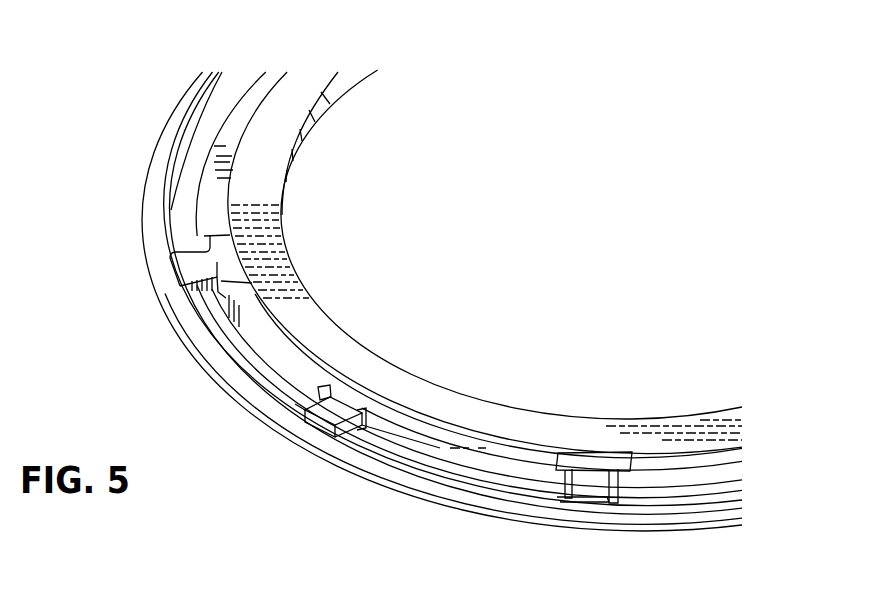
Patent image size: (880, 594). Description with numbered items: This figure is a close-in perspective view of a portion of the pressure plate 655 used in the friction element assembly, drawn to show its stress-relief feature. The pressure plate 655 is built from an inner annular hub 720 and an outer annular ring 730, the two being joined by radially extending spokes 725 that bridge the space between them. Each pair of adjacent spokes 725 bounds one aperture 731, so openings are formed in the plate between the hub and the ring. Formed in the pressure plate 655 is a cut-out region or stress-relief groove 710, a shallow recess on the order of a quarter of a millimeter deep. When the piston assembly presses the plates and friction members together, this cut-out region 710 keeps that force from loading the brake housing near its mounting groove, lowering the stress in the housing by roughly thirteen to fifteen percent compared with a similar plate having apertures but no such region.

The pressure plate 655 is at (162, 131).
The inner annular hub 720 is at (248, 93).
The radially extending spokes 725 is at (190, 246).
The aperture 731 is at (237, 347).
The outer annular ring 730 is at (243, 390).
The cut-out region or stress-relief groove 710 is at (348, 406).